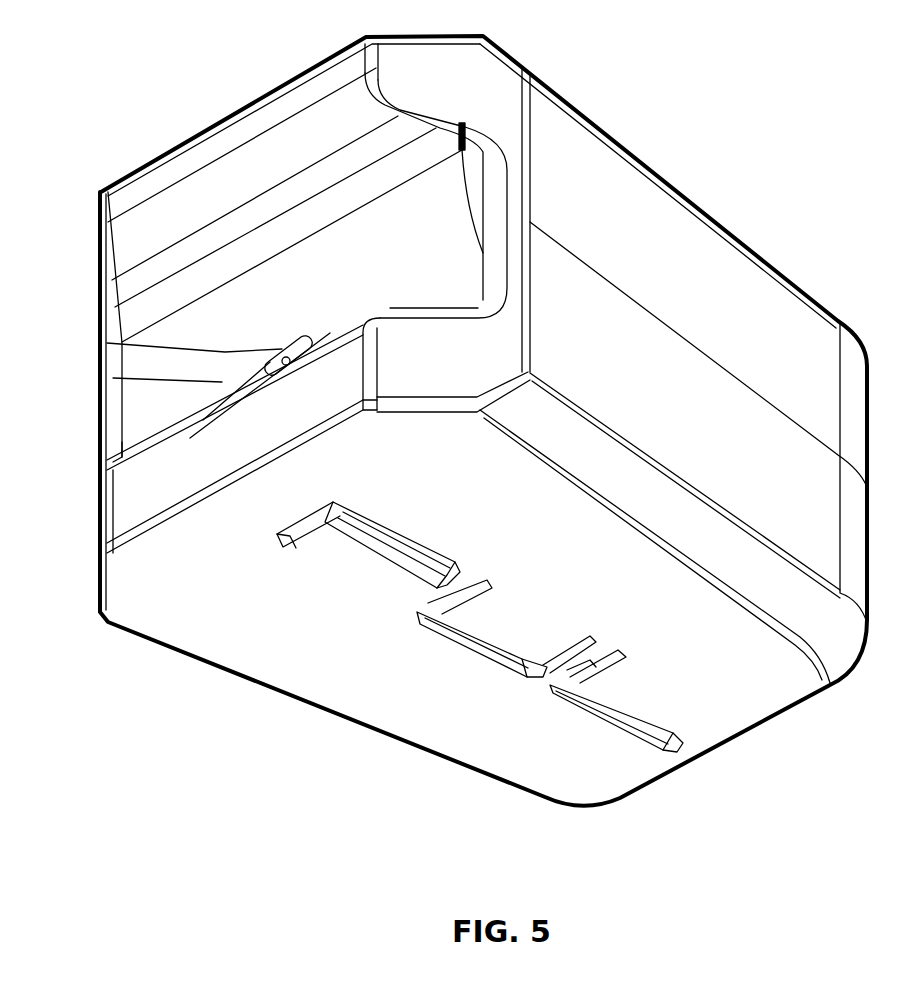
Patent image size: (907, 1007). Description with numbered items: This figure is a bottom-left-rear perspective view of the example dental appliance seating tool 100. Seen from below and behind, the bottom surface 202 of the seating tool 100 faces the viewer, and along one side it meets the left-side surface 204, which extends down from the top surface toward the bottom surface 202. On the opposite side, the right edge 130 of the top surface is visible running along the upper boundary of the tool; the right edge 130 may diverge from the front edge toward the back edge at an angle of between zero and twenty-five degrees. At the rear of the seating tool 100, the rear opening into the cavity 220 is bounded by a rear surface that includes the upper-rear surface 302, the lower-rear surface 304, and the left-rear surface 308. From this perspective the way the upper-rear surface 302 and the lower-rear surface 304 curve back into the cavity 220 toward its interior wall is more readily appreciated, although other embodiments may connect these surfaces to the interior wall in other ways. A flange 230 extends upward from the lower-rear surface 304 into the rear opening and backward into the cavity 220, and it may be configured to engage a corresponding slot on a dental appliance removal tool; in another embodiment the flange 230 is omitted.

The seating tool 100 is at (98, 100).
The upper-rear surface 302 is at (232, 132).
The cavity 220 is at (263, 318).
The right edge 130 is at (643, 165).
The left-side surface 204 is at (715, 287).
The left-rear surface 308 is at (493, 345).
The flange 230 is at (300, 348).
The lower-rear surface 304 is at (118, 500).
The bottom surface 202 is at (320, 663).